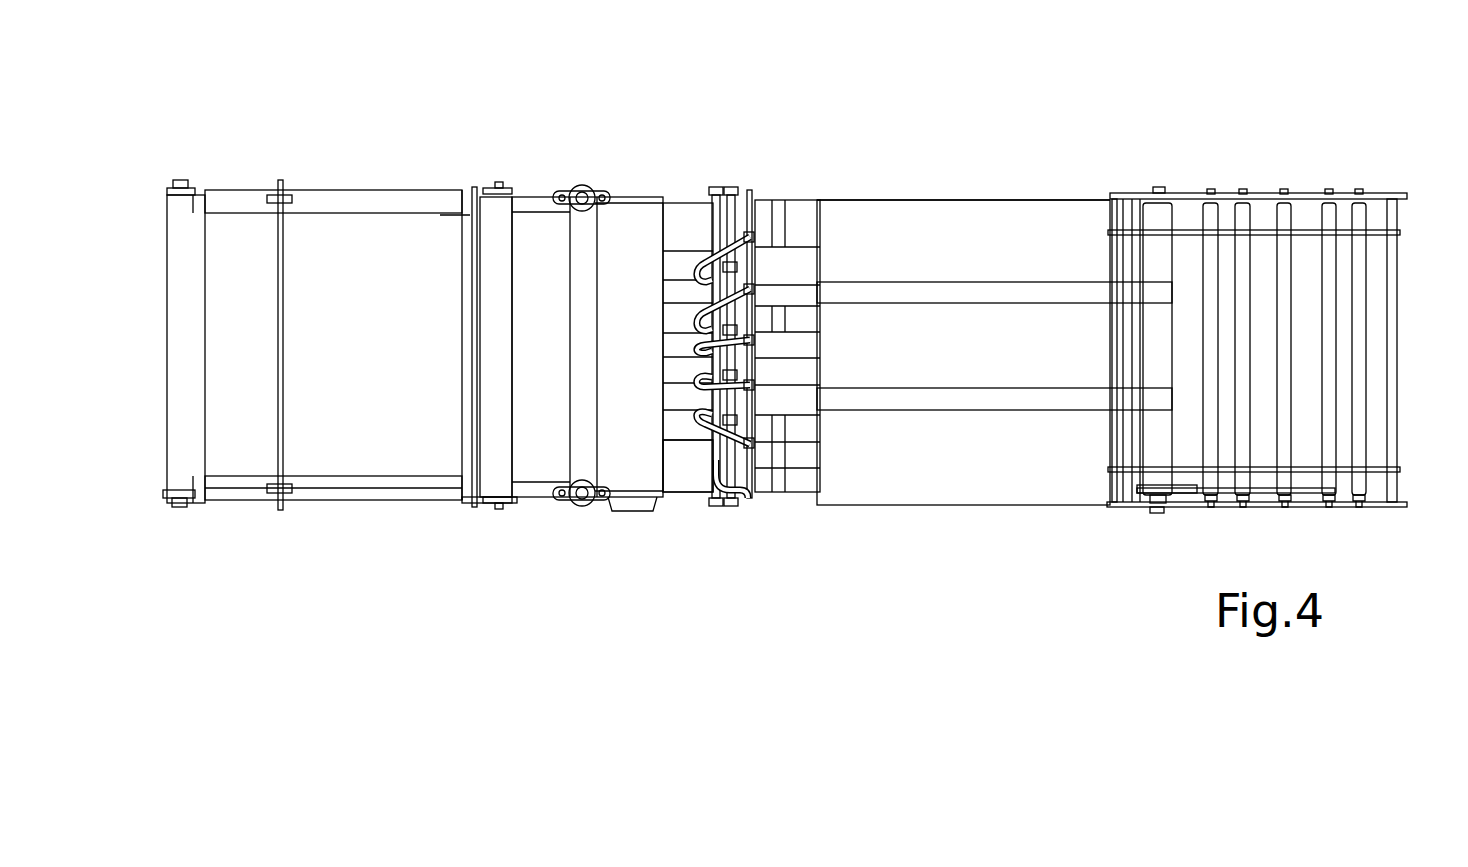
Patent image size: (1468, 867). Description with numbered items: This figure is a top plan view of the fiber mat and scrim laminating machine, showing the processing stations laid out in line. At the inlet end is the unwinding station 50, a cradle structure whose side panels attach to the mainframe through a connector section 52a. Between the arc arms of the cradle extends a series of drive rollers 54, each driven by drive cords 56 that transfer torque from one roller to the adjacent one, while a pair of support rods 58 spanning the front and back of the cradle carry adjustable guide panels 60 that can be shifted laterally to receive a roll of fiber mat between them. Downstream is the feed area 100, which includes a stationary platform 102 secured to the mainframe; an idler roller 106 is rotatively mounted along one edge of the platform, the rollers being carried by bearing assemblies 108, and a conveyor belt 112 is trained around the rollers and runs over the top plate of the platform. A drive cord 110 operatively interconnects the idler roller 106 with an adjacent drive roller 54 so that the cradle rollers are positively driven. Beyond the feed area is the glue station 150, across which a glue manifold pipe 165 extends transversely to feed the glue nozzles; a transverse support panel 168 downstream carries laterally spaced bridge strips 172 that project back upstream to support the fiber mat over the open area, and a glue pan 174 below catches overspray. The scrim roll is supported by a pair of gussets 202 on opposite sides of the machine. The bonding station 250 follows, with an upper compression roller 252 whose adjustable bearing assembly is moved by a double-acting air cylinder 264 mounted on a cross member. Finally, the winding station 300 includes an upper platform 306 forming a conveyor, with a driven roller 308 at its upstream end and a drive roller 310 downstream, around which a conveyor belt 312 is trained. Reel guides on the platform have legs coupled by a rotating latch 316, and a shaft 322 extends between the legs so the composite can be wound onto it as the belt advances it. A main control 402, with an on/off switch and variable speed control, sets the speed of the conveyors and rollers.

The winding station 300 is at (228, 172).
The drive roller 310 is at (170, 200).
The rotating latch 316 is at (270, 190).
The shaft 322 is at (282, 248).
The upper platform 306 is at (375, 187).
The driven roller 308 is at (492, 187).
The conveyor belt 312 is at (325, 460).
The gusset 202 is at (520, 505).
The bonding station 250 is at (561, 170).
The double-acting air cylinder 264 is at (570, 187).
The upper compression roller 252 is at (590, 240).
The main control 402 is at (622, 510).
The transverse support panel 168 is at (638, 237).
The glue pan 174 is at (680, 473).
The glue station 150 is at (720, 170).
The glue manifold pipe 165 is at (745, 200).
The bridge strips 172 is at (770, 262).
The bearing assemblies 108 is at (790, 318).
The feed area 100 is at (990, 478).
The stationary platform 102 is at (1008, 200).
The conveyor belt 112 is at (878, 290).
The unwinding station 50 is at (1240, 153).
The connector section 52a is at (1378, 197).
The adjustable guide panels 60 is at (1303, 232).
The support rods 58 is at (1112, 255).
The idler roller 106 is at (1155, 213).
The drive rollers 54 is at (1353, 327).
The drive cords 56 is at (1268, 488).
The drive cord 110 is at (1160, 488).